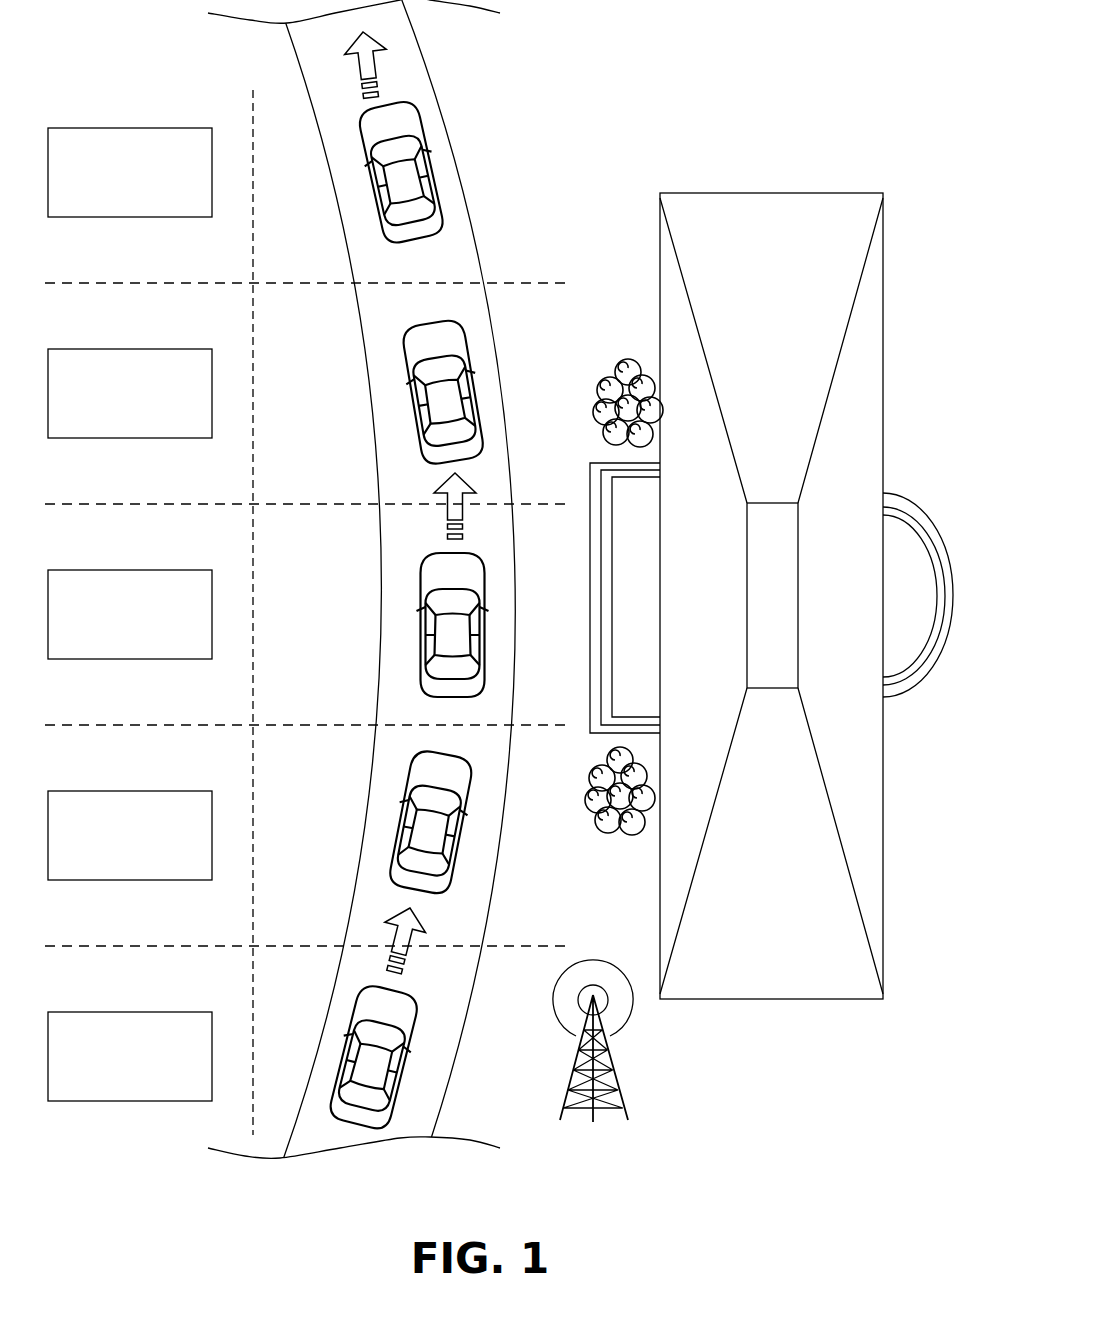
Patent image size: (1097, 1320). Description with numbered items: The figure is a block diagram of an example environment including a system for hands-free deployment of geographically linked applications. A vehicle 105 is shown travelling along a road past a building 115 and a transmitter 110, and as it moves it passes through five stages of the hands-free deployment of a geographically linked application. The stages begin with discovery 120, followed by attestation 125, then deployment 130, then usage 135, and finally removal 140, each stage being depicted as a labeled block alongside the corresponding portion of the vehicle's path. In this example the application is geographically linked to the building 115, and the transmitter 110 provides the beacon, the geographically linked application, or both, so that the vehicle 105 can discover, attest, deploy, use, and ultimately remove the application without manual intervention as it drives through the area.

The vehicle 105 is at (347, 1050).
The transmitter 110 is at (593, 1122).
The building 115 is at (770, 193).
The discovery 120 is at (130, 1012).
The attestation 125 is at (130, 791).
The deployment 130 is at (130, 570).
The usage 135 is at (130, 349).
The removal 140 is at (130, 128).